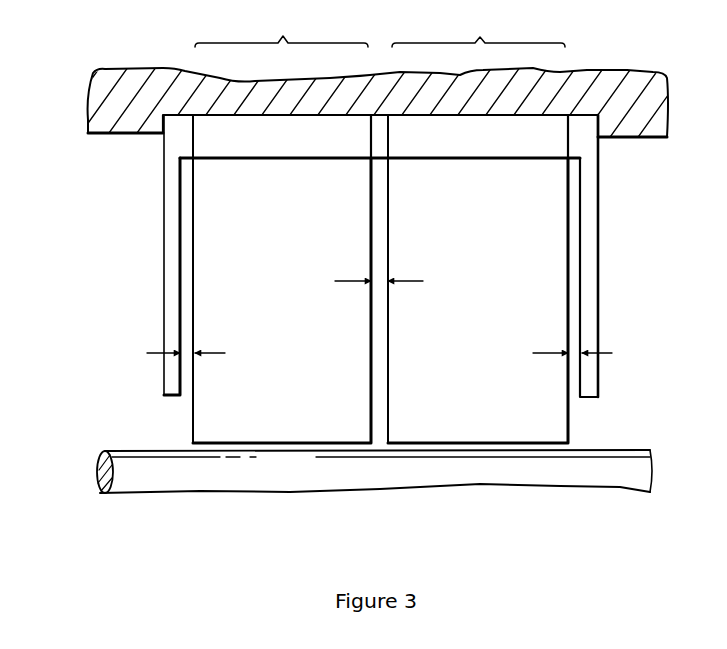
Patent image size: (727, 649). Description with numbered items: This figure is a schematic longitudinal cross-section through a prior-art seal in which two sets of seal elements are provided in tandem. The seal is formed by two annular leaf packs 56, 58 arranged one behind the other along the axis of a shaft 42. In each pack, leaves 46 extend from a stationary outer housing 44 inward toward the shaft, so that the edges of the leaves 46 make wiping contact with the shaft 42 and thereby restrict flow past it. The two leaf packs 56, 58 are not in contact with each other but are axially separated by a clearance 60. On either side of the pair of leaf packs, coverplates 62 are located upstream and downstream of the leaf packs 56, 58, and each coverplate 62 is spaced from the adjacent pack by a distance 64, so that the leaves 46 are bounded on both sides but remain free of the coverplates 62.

The shaft 42 is at (550, 468).
The stationary outer housing 44 is at (593, 80).
The leaves 46 is at (207, 198).
The annular leaf pack 56 is at (281, 26).
The annular leaf pack 58 is at (478, 27).
The clearance 60 is at (378, 280).
The coverplates 62 is at (173, 272).
The distances 64 is at (180, 352).